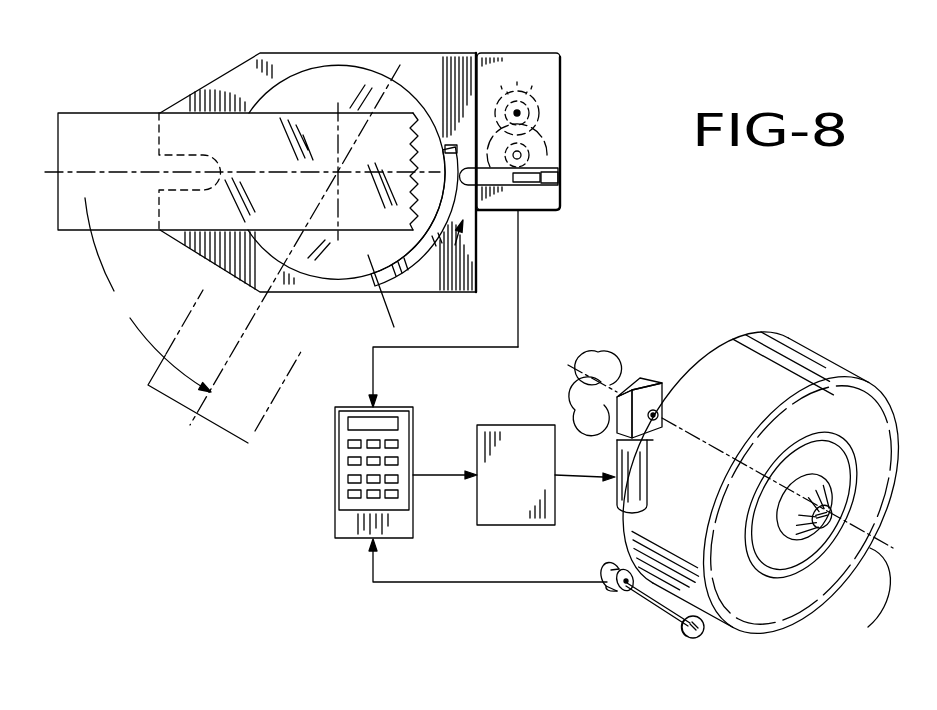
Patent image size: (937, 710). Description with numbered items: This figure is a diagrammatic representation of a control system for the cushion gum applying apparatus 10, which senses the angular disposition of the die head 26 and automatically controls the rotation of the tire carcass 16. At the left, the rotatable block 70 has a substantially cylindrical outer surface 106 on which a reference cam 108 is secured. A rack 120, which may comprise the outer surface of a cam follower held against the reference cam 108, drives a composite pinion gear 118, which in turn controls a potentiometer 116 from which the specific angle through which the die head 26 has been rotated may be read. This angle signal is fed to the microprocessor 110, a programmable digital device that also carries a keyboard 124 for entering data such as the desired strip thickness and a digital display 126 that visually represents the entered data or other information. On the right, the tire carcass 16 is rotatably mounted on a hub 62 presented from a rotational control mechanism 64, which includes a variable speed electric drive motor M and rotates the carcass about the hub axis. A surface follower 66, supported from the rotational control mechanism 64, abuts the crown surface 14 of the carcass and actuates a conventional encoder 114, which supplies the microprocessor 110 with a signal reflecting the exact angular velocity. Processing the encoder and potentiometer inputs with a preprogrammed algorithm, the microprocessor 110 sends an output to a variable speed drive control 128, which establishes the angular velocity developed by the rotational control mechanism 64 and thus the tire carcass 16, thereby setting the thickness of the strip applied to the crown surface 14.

The apparatus 10 is at (695, 232).
The die head 26 is at (214, 78).
The rotatable block 70 is at (295, 94).
The cylindrical outer surface 106 is at (408, 92).
The reference cam 108 is at (420, 265).
The potentiometer 116 is at (548, 88).
The composite pinion gear 118 is at (545, 120).
The rack 120 is at (540, 165).
The microprocessor 110 is at (330, 526).
The keyboard 124 is at (352, 467).
The digital display 126 is at (386, 424).
The variable speed drive control 128 is at (538, 482).
The rotational control mechanism 64 is at (678, 377).
The variable speed electric drive motor M is at (645, 377).
The crown surface 14 is at (825, 356).
The tire carcass 16 is at (806, 608).
The hub 62 is at (800, 510).
The encoder 114 is at (618, 597).
The surface follower 66 is at (686, 640).